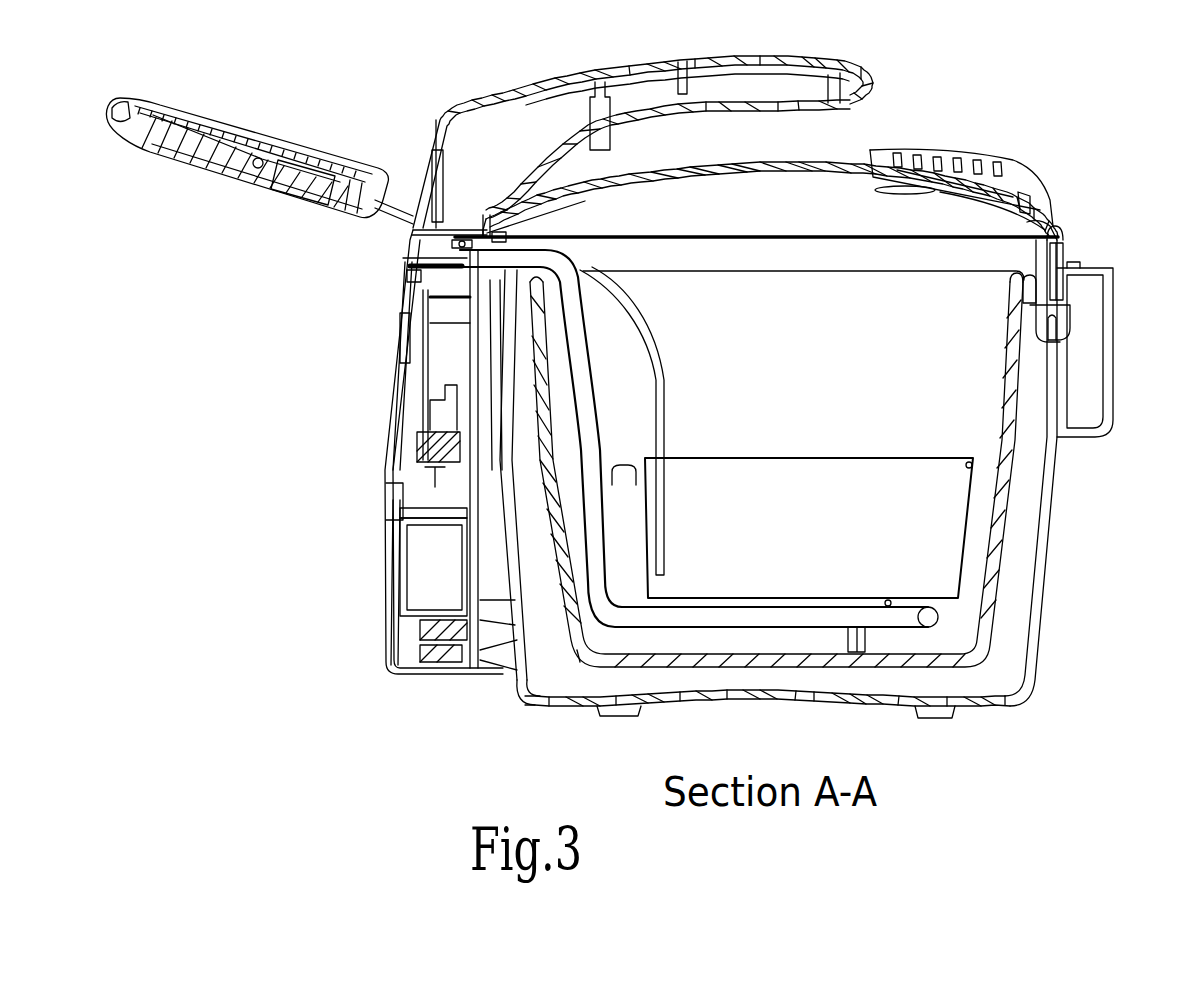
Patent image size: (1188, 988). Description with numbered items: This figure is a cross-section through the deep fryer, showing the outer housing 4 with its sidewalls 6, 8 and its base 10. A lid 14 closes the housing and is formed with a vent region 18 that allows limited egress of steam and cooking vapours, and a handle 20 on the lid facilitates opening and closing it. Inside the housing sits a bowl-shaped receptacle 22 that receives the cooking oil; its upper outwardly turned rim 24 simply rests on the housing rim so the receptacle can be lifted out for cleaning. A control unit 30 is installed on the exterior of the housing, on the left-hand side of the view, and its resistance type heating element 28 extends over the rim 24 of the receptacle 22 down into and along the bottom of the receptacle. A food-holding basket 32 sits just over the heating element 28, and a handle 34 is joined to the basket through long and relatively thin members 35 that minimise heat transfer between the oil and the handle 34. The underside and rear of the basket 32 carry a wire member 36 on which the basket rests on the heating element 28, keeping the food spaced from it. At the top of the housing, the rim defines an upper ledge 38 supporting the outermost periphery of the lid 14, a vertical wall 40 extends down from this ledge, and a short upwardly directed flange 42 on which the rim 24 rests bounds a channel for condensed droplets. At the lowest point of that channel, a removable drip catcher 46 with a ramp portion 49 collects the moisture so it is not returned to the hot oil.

The outer housing 4 is at (1043, 290).
The sidewall 6 is at (1050, 500).
The sidewall 8 is at (515, 673).
The base 10 is at (767, 703).
The lid 14 is at (817, 158).
The vent region 18 is at (965, 160).
The handle 20 is at (640, 63).
The receptacle 22 is at (1012, 385).
The upper outwardly turned rim 24 is at (1012, 266).
The heating element 28 is at (613, 595).
The control unit 30 is at (395, 415).
The food-holding basket 32 is at (960, 555).
The handle 34 is at (213, 125).
The thin members 35 is at (660, 410).
The wire member 36 is at (823, 600).
The upper ledge 38 is at (1068, 234).
The vertical wall 40 is at (1063, 258).
The upwardly directed flange 42 is at (1048, 226).
The drip catcher 46 is at (1110, 323).
The ramp portion 49 is at (1060, 317).